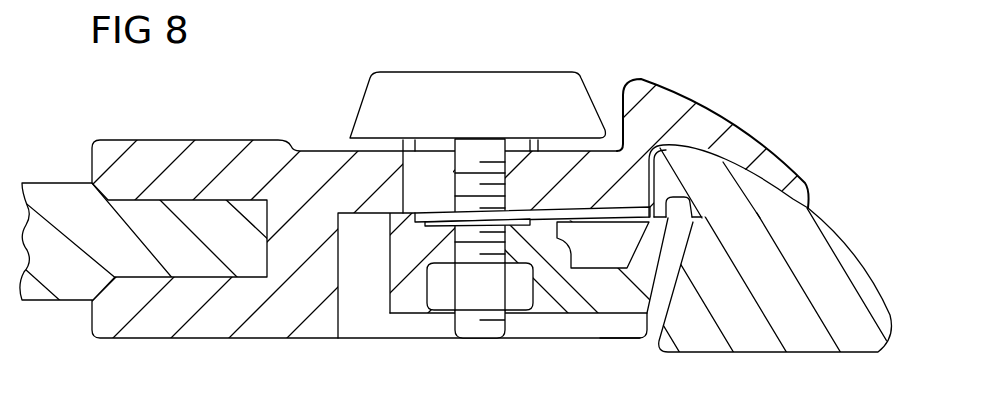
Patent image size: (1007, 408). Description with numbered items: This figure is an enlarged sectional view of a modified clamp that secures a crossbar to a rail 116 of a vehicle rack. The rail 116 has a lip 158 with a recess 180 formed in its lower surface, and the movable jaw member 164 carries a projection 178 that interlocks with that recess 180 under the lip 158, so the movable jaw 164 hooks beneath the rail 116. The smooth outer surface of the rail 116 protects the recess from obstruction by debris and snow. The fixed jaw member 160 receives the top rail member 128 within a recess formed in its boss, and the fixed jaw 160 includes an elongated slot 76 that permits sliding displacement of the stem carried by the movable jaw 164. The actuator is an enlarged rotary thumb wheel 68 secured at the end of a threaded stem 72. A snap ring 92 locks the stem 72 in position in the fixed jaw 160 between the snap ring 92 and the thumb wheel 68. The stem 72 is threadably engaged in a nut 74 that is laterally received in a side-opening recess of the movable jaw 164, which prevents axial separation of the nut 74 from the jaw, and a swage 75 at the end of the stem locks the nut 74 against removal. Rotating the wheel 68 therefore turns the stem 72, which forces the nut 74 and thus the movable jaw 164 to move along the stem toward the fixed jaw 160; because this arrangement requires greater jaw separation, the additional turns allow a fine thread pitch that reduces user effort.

The rotary wheel 68 is at (378, 92).
The threaded stem 72 is at (472, 175).
The nut 74 is at (519, 297).
The swage 75 is at (453, 331).
The elongated slot 76 is at (403, 172).
The snap ring 92 is at (500, 212).
The rail 116 is at (864, 278).
The top rail member 128 is at (67, 192).
The lip 158 is at (680, 160).
The fixed jaw member 160 is at (652, 97).
The movable jaw member 164 is at (590, 303).
The projection 178 is at (683, 209).
The recess 180 is at (682, 206).